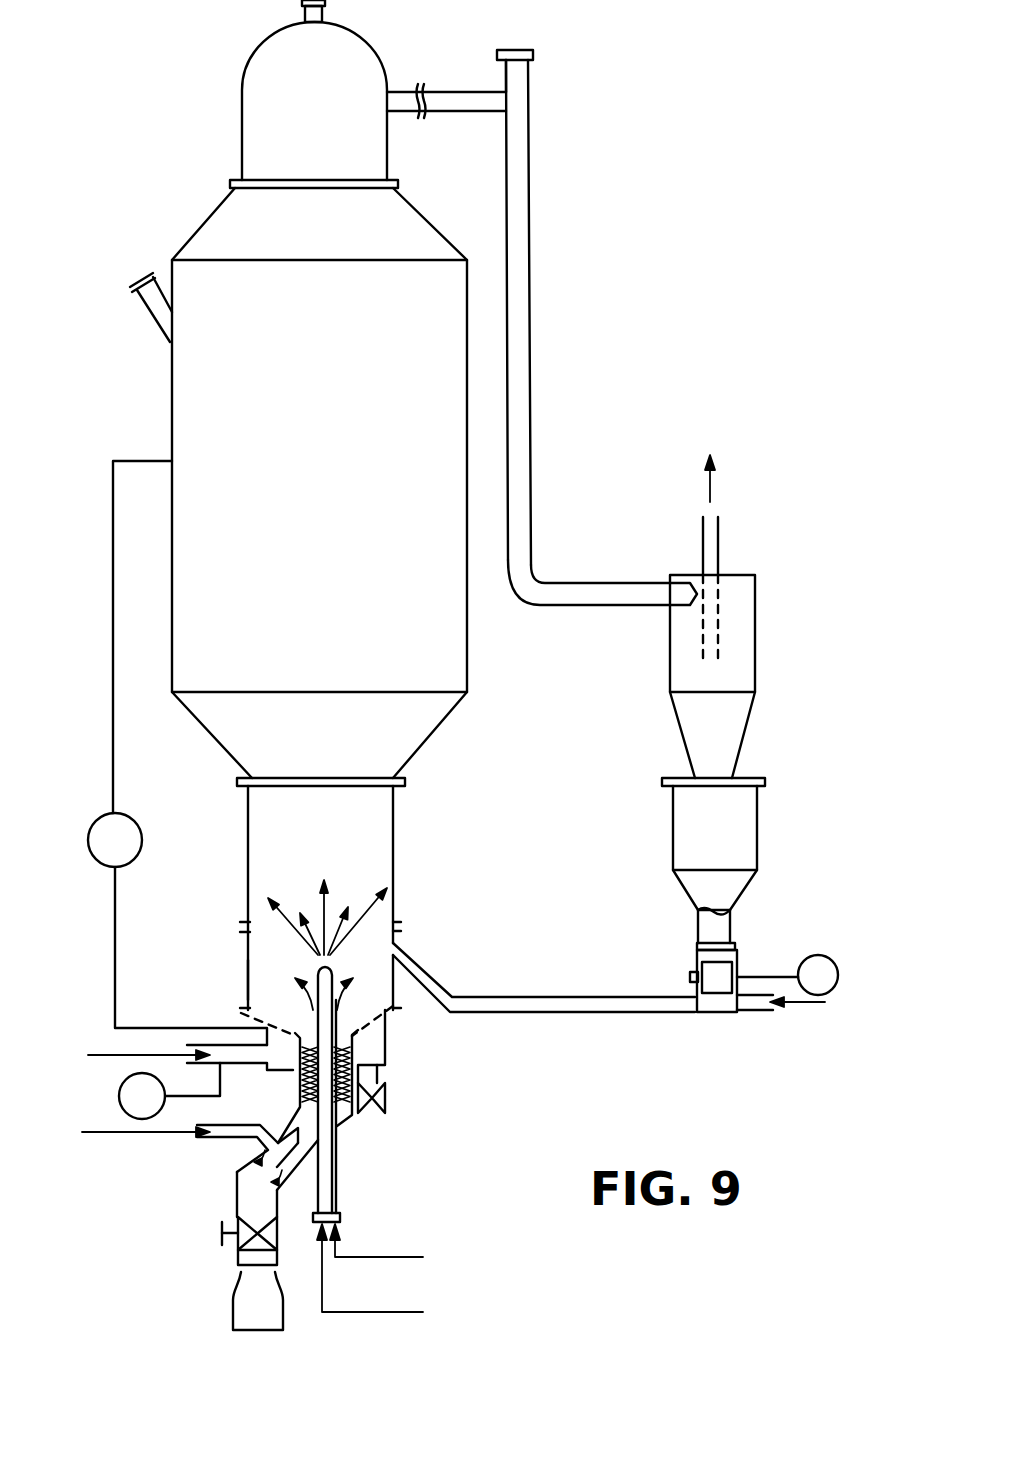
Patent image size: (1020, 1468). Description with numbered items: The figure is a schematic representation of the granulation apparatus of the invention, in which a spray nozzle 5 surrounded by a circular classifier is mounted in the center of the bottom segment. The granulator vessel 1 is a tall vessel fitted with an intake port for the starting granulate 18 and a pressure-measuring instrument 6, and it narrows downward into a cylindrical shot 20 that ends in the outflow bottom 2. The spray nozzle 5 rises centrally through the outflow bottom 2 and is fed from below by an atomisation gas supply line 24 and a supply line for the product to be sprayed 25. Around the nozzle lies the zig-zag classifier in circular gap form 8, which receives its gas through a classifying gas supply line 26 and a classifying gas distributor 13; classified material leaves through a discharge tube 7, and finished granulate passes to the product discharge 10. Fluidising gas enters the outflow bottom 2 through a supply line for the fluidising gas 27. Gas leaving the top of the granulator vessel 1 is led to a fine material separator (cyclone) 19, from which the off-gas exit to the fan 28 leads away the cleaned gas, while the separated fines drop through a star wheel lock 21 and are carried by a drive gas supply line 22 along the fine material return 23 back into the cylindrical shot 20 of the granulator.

The granulator vessel 1 is at (180, 383).
The outflow bottom 2 is at (248, 987).
The spray nozzle 5 is at (317, 969).
The pressure-measuring instrument 6 is at (100, 822).
The discharge tube 7 is at (347, 1112).
The zig-zag classifier in circular gap form 8 is at (330, 1042).
The product discharge 10 is at (235, 1222).
The classifying gas distributor 13 is at (303, 1147).
The intake port for the starting granulate 18 is at (147, 277).
The fine material separator (cyclone) 19 is at (747, 603).
The cylindrical shot 20 is at (382, 820).
The star wheel lock 21 is at (738, 960).
The drive gas supply line 22 is at (803, 1003).
The fine material return 23 is at (507, 1003).
The atomisation gas supply line 24 is at (386, 1242).
The supply line for the product to be sprayed 25 is at (388, 1275).
The classifying gas supply line 26 is at (173, 1146).
The supply line for the fluidising gas 27 is at (173, 1077).
The off-gas exit to the fan 28 is at (718, 529).